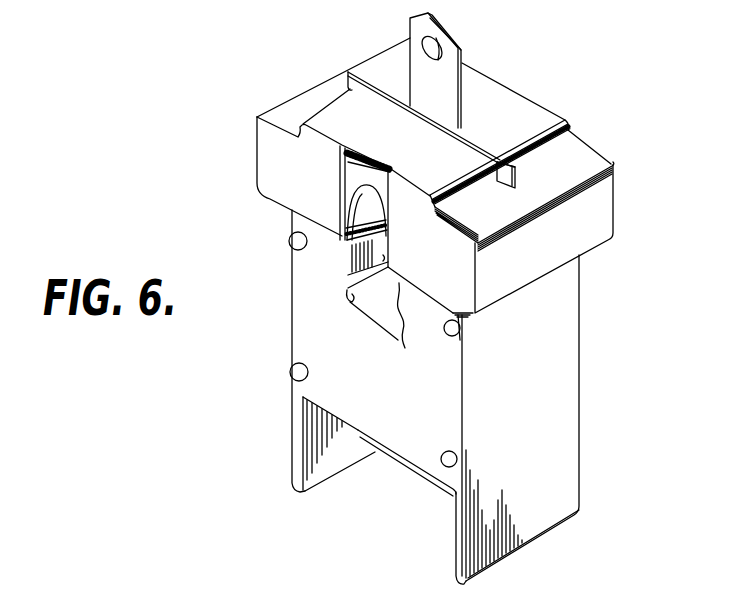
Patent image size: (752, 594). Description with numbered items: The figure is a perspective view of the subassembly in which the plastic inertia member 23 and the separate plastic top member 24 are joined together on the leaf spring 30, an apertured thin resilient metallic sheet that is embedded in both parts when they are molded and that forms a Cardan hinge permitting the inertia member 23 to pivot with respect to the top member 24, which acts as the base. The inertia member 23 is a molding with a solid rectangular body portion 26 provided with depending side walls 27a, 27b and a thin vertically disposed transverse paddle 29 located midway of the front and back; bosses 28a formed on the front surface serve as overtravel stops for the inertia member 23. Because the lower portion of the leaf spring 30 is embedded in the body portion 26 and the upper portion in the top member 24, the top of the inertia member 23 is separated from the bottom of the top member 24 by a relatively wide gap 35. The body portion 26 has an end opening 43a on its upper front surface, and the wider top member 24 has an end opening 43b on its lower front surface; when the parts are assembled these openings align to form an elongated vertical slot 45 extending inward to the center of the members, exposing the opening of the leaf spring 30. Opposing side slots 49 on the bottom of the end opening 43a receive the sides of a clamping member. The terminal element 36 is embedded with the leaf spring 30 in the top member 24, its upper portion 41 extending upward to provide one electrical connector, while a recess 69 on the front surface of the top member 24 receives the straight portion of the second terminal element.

The inertia member 23 is at (581, 359).
The top member 24 is at (615, 188).
The body portion 26 is at (395, 418).
The side wall 27a is at (298, 478).
The side wall 27b is at (454, 553).
The bosses 28a is at (290, 248).
The paddle 29 is at (398, 458).
The leaf spring 30 is at (520, 168).
The gap 35 is at (462, 318).
The terminal element 36 is at (463, 97).
The upper portion 41 is at (440, 80).
The end opening 43a is at (363, 316).
The end opening 43b is at (352, 210).
The slot 45 is at (362, 266).
The side slots 49 is at (363, 295).
The recess 69 is at (355, 150).